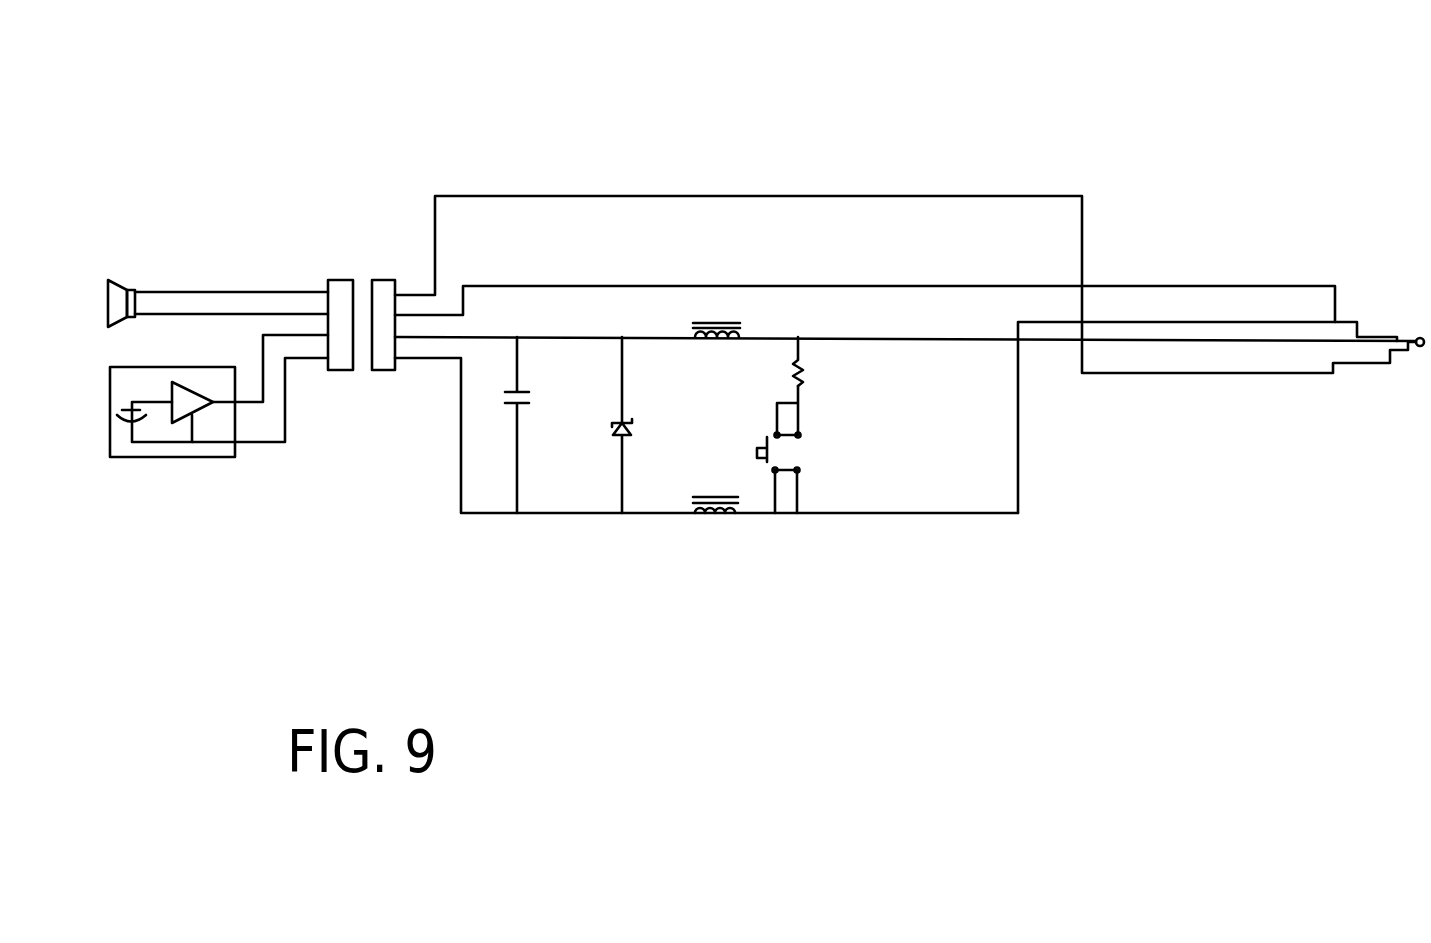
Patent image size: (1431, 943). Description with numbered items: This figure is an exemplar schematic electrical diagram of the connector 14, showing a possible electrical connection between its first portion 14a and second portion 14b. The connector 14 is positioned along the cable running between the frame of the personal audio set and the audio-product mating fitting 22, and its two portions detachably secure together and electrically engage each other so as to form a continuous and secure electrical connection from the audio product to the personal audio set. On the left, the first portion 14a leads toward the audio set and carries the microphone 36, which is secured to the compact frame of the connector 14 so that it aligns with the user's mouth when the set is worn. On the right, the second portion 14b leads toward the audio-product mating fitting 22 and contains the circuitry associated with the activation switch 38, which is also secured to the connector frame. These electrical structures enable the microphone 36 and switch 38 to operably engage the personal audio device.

The connector 14 is at (95, 618).
The first portion 14a is at (345, 253).
The second portion 14b is at (1283, 138).
The audio-product mating fitting 22 is at (1418, 333).
The microphone 36 is at (126, 457).
The activation switch 38 is at (796, 451).